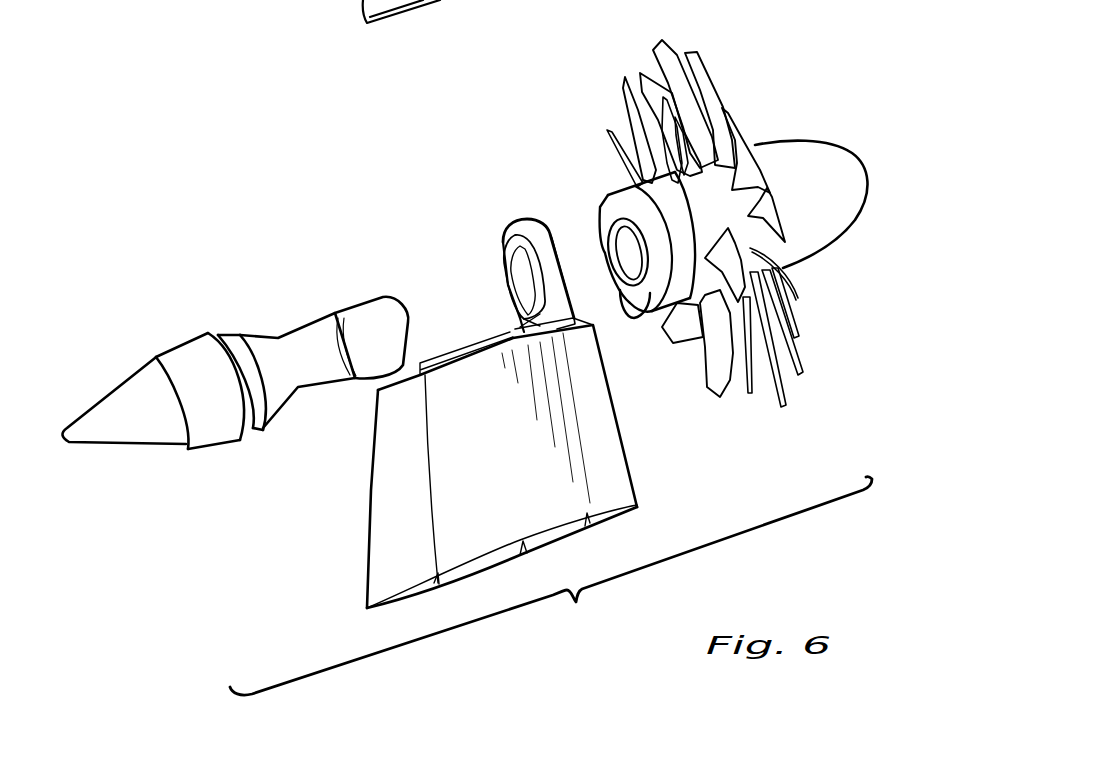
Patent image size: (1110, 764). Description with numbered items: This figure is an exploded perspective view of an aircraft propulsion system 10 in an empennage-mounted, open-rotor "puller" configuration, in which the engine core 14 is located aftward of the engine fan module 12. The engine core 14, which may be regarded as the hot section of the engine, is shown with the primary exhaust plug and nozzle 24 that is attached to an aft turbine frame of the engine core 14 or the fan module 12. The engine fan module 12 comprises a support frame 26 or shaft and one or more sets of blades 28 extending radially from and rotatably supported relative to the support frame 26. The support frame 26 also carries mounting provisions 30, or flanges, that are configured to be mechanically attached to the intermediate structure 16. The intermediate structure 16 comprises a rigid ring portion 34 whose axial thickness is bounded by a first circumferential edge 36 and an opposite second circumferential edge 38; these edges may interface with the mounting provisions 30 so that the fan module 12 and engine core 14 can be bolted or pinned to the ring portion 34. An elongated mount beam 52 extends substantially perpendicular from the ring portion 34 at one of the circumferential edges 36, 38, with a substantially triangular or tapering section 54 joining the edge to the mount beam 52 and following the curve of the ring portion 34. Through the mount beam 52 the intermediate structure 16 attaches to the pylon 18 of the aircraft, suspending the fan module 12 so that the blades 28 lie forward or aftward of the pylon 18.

The aircraft propulsion system 10 is at (246, 224).
The engine fan module 12 is at (633, 241).
The engine core 14 is at (255, 338).
The intermediate structure 16 is at (500, 237).
The pylon 18 is at (372, 503).
The primary exhaust plug and nozzle 24 is at (108, 410).
The support frame 26 is at (622, 293).
The blades 28 is at (668, 55).
The mounting provisions 30 is at (601, 220).
The ring portion 34 is at (515, 260).
The first circumferential edge 36 is at (556, 240).
The second circumferential edge 38 is at (505, 238).
The mount beam 52 is at (468, 357).
The tapering section 54 is at (515, 302).